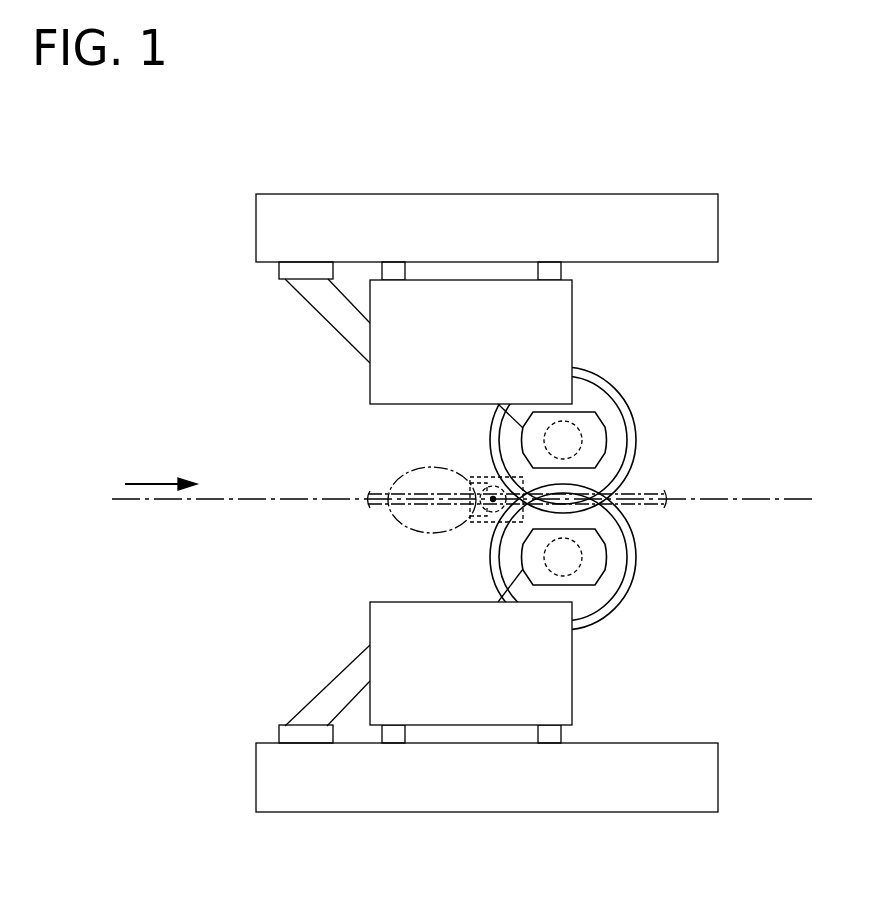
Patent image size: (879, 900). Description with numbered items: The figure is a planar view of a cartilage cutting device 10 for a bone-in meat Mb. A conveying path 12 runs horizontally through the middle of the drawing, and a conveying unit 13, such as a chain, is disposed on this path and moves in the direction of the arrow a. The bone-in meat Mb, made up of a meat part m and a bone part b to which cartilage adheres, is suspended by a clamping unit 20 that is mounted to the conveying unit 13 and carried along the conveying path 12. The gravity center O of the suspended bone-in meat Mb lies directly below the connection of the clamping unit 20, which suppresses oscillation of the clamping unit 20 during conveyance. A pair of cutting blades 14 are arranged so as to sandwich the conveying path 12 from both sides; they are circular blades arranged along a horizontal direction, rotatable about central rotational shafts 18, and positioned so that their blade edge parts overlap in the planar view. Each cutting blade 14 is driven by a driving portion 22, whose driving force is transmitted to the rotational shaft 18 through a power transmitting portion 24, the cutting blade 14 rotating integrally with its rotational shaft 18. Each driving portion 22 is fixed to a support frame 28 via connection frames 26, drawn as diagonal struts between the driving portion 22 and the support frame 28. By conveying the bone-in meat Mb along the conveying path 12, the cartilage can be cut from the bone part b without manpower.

The cartilage cutting device 10 is at (486, 122).
The conveying path 12 is at (263, 500).
The conveying unit 13 is at (643, 492).
The cutting blade 14 is at (632, 416).
The rotational shaft 18 is at (563, 441).
The clamping unit 20 is at (477, 474).
The driving portion 22 is at (565, 315).
The power transmitting portion 24 is at (565, 412).
The connection frame 26 is at (322, 305).
The support frame 28 is at (597, 201).
The arrow a is at (156, 483).
The meat part m is at (405, 487).
The bone-in meat Mb is at (378, 513).
The gravity center O is at (490, 501).
The bone part b is at (468, 534).